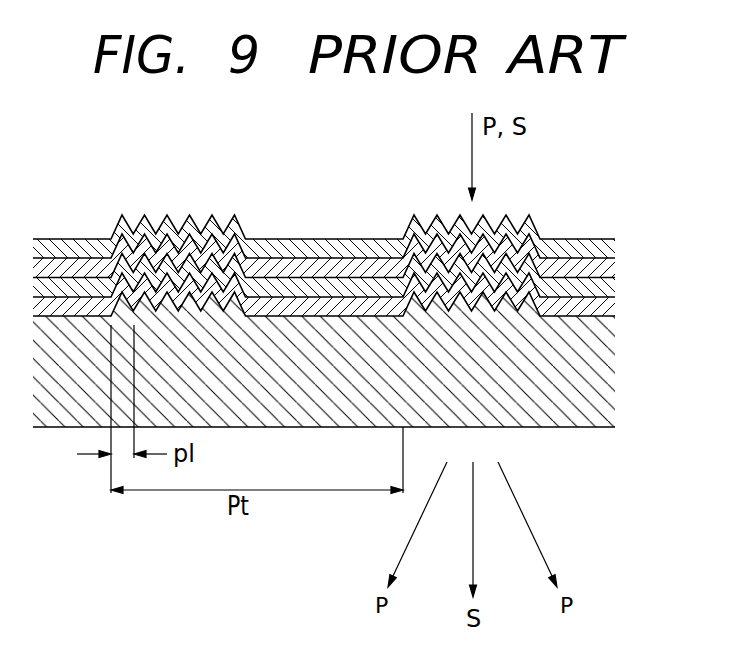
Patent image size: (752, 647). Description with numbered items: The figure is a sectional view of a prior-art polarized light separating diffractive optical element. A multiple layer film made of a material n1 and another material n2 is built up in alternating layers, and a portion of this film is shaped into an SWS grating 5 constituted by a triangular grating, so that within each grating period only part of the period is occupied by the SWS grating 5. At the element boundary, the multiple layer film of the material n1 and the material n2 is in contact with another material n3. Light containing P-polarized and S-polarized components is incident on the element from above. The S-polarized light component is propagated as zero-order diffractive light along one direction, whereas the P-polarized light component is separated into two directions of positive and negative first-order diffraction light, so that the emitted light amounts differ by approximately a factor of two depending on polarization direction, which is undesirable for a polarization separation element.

The SWS grating 5 is at (172, 222).
The material n1 is at (353, 341).
The material n2 is at (597, 307).
The material n3 is at (598, 201).